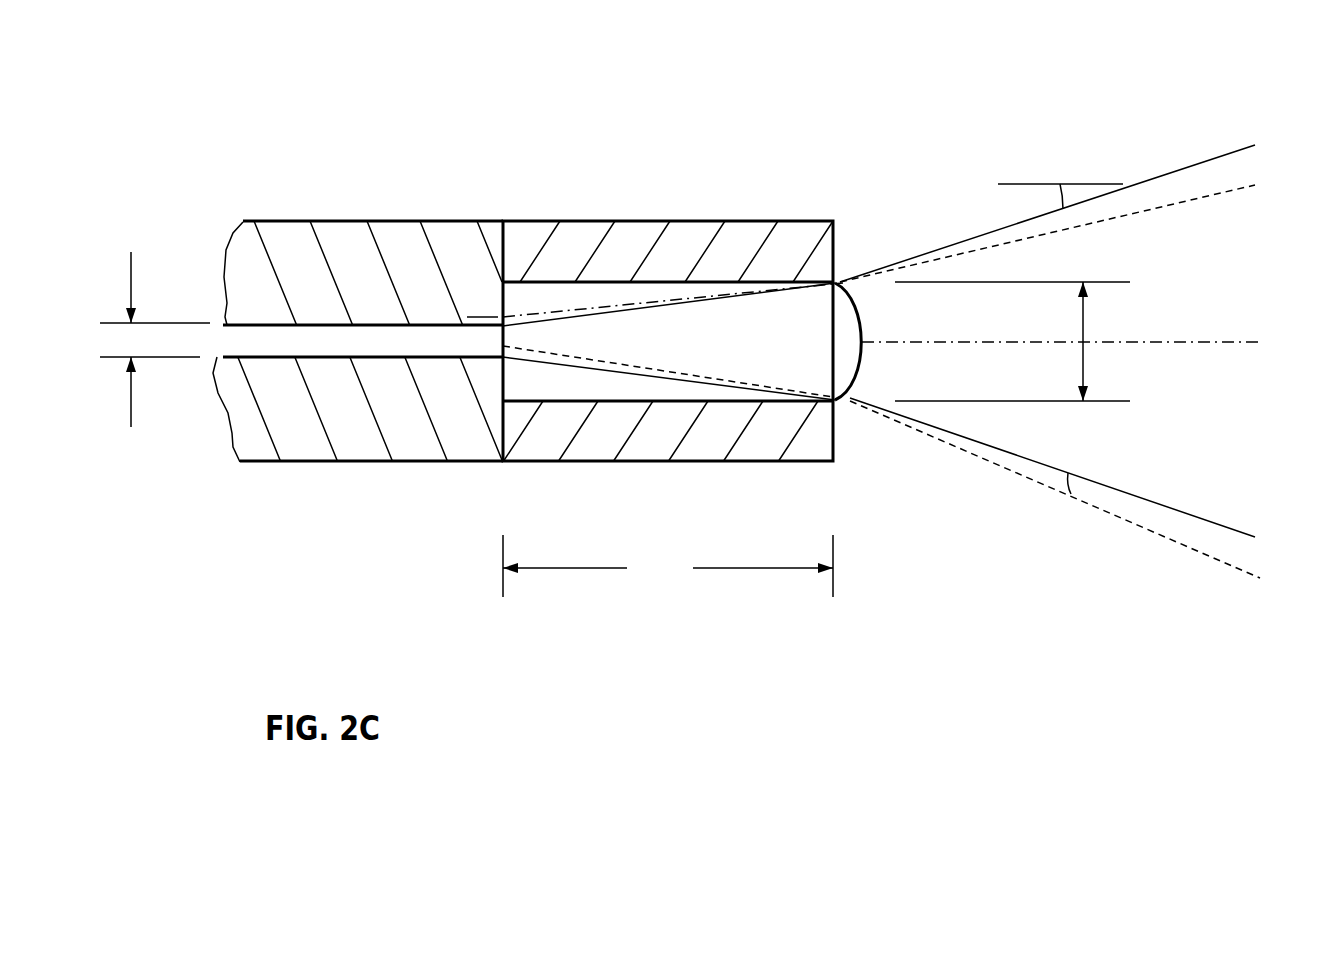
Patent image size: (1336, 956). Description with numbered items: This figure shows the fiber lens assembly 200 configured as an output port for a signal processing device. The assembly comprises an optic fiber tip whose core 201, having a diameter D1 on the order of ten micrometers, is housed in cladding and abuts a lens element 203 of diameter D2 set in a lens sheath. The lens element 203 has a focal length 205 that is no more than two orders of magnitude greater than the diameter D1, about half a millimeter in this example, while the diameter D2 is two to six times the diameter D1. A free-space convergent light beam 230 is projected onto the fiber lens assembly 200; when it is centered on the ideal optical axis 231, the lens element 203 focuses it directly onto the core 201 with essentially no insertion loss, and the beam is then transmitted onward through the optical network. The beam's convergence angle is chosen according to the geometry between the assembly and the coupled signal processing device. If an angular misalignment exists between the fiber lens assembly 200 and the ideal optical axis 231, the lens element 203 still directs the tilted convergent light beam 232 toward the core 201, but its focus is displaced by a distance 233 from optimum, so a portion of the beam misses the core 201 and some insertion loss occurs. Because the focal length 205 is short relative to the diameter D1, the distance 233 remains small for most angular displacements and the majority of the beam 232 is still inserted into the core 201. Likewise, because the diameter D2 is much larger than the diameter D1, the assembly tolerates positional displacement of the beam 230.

The fiber lens assembly 200 is at (686, 127).
The core 201 is at (227, 340).
The lens element 203 is at (840, 285).
The focal length 205 is at (668, 566).
The convergent light beam 230 is at (1187, 169).
The ideal optical axis 231 is at (1227, 343).
The convergent light beam 232 is at (1015, 468).
The distance 233 is at (471, 308).
The diameter D1 is at (130, 287).
The diameter D2 is at (1083, 315).